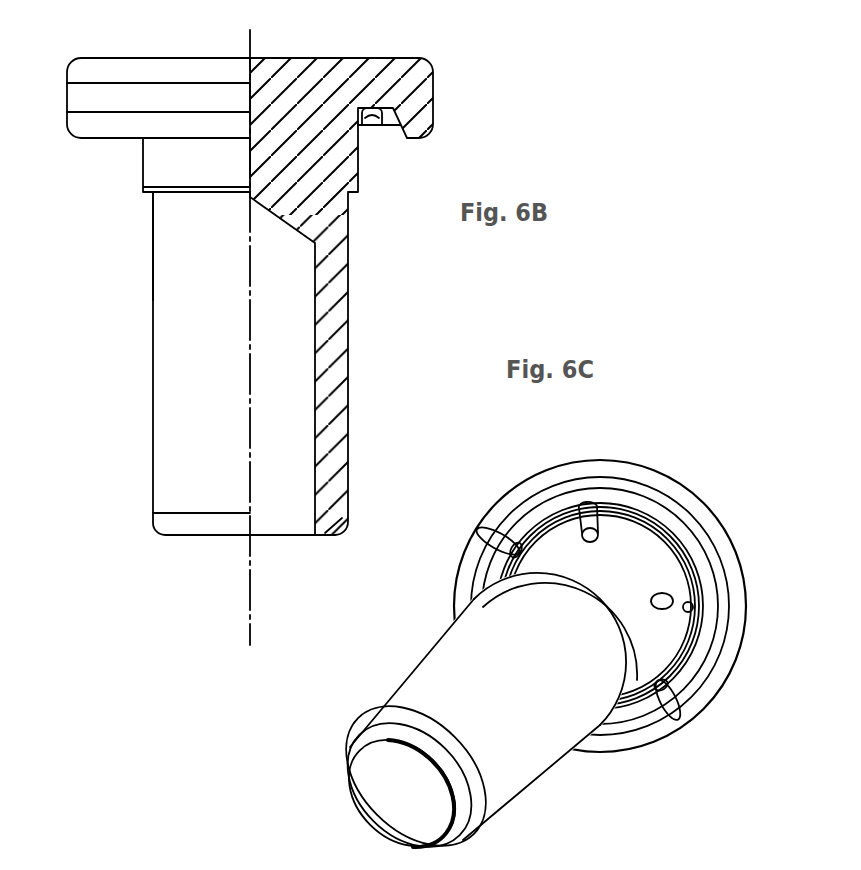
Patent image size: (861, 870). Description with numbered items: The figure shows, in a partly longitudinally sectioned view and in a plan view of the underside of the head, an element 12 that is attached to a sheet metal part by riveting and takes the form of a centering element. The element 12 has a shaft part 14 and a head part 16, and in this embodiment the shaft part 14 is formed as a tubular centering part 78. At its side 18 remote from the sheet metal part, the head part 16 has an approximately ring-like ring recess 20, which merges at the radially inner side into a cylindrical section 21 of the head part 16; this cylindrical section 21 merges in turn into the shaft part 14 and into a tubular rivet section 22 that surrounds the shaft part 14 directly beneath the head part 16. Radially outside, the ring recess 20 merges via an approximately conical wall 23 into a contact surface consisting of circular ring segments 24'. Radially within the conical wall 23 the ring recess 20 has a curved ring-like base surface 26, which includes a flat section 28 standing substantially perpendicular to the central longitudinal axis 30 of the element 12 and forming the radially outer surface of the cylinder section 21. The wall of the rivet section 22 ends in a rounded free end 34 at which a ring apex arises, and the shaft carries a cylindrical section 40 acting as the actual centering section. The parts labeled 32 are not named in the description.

In FIG. 6B, the element 12 is at (274, 326).
In FIG. 6C, the element 12 is at (485, 646).
In FIG. 6B, the shaft part 14 is at (337, 418).
In FIG. 6C, the shaft part 14 is at (527, 753).
In FIG. 6B, the head part 16 is at (383, 58).
In FIG. 6C, the head part 16 is at (648, 484).
In FIG. 6B, the side 18 is at (365, 143).
In FIG. 6C, the side 18 is at (490, 512).
In FIG. 6B, the ring recess 20 is at (380, 138).
In FIG. 6B, the cylindrical section 21 is at (347, 140).
In FIG. 6C, the cylindrical section 21 is at (543, 547).
In FIG. 6B, the tubular rivet section 22 is at (352, 167).
In FIG. 6C, the tubular rivet section 22 is at (610, 587).
In FIG. 6B, the conical wall 23 is at (393, 138).
In FIG. 6C, the conical wall 23 is at (478, 567).
In FIG. 6B, the circular ring segments 24' is at (149, 161).
In FIG. 6B, the base surface 26 is at (363, 110).
In FIG. 6B, the flat section 28 is at (393, 108).
In FIG. 6B, the central longitudinal axis 30 is at (248, 618).
In FIG. 6B, the retaining projections 32 is at (398, 126).
In FIG. 6C, the retaining projections 32 is at (588, 505).
In FIG. 6B, the free end 34 is at (352, 197).
In FIG. 6C, the free end 34 is at (597, 600).
In FIG. 6B, the cylindrical section 40 is at (252, 231).
In FIG. 6B, the tubular centering part 78 is at (65, 582).
In FIG. 6C, the tubular centering part 78 is at (201, 769).